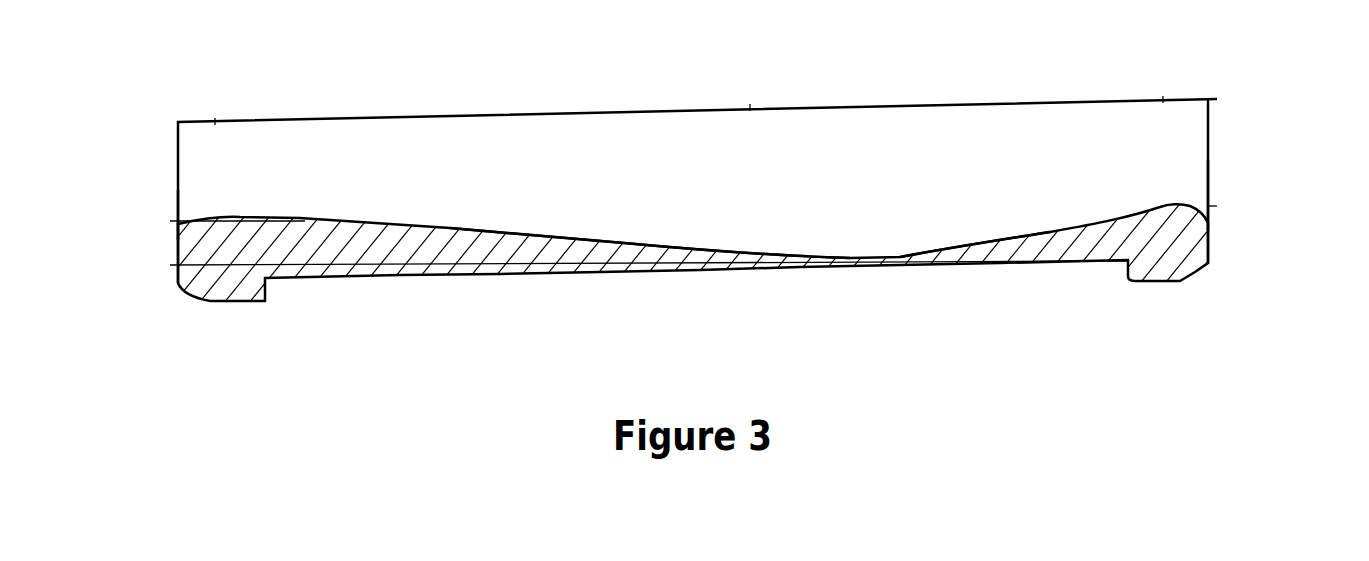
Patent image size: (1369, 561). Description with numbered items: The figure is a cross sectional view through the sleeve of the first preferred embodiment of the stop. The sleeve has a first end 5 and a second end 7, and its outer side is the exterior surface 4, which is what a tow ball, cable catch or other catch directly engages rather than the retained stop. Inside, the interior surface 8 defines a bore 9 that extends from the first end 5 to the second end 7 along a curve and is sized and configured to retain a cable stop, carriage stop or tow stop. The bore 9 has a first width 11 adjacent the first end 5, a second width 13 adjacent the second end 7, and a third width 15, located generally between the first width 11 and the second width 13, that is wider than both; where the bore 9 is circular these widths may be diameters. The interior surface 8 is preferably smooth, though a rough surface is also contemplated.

The exterior surface 4 is at (447, 291).
The first end 5 is at (1220, 189).
The second end 7 is at (167, 212).
The interior surface 8 is at (633, 228).
The bore 9 is at (347, 192).
The first width 11 is at (1223, 126).
The second width 13 is at (164, 150).
The third width 15 is at (929, 205).